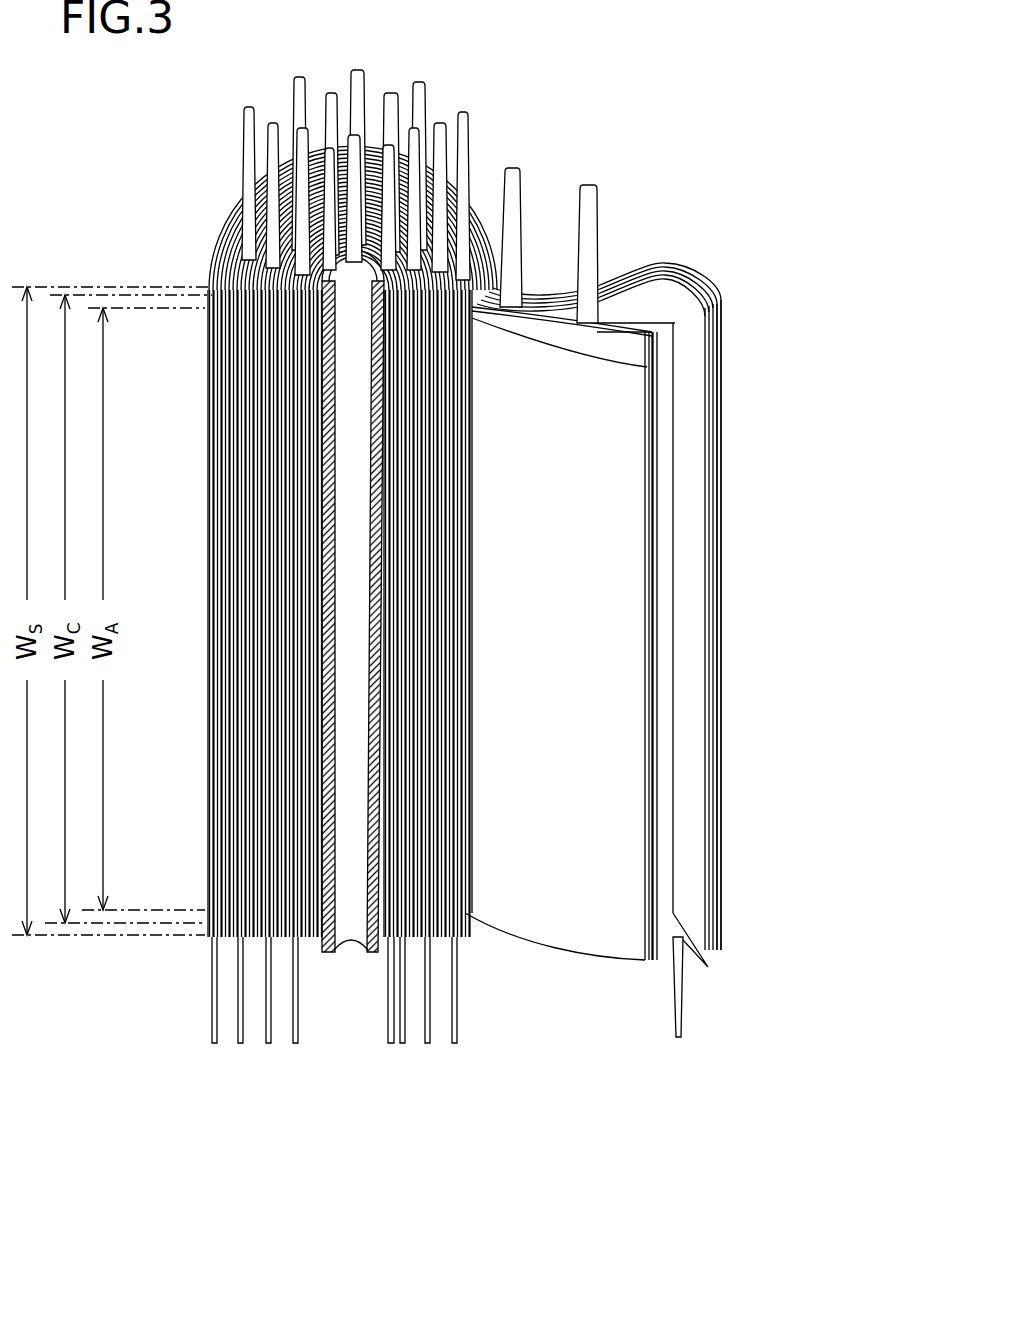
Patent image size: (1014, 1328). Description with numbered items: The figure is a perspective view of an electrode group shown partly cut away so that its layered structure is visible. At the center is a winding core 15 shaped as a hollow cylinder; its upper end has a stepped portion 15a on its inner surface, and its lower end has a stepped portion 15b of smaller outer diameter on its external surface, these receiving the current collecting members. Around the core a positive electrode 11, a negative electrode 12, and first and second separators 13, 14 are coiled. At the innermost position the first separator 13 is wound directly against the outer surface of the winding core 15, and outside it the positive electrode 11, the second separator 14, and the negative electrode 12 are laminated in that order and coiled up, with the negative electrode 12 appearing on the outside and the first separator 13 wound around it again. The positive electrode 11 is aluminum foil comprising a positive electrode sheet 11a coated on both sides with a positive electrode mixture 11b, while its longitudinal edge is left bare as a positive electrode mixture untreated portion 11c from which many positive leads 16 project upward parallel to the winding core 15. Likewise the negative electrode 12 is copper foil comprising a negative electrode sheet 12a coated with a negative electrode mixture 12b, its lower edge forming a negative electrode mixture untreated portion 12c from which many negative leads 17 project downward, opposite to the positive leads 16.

The positive electrode 11 is at (832, 430).
The positive electrode sheet 11a is at (217, 500).
The positive electrode mixture 11b is at (218, 500).
The positive electrode mixture untreated portion 11c is at (628, 343).
The negative electrode 12 is at (846, 1028).
The negative electrode sheet 12a is at (230, 737).
The negative electrode mixture 12b is at (230, 737).
The negative electrode mixture untreated portion 12c is at (687, 970).
The first separator 13 is at (720, 872).
The second separator 14 is at (663, 828).
The winding core 15 is at (262, 690).
The stepped portion 15a is at (323, 310).
The stepped portion 15b is at (318, 952).
The positive leads 16 is at (413, 207).
The negative leads 17 is at (292, 1033).